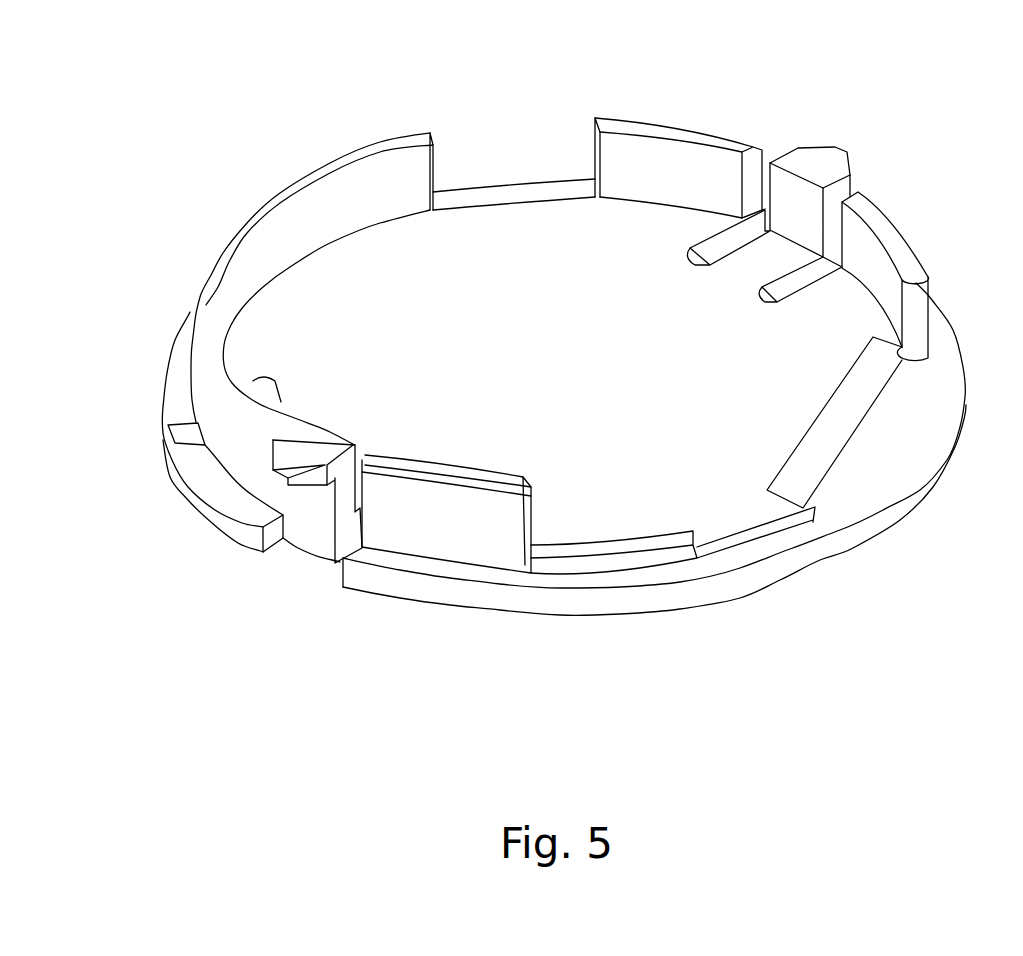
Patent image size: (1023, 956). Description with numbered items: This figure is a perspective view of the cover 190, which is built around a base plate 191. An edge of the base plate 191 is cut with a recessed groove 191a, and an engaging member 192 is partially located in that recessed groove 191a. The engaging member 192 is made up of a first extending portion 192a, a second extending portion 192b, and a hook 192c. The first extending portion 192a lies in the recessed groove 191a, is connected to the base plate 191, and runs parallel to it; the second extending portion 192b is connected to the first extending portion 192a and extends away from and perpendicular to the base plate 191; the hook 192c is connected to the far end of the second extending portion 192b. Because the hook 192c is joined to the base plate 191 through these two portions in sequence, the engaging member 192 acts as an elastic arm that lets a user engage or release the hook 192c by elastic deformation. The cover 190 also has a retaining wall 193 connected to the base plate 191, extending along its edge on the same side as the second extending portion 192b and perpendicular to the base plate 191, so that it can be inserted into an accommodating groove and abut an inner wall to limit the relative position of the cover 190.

The cover 190 is at (128, 101).
The base plate 191 is at (890, 512).
The recessed groove 191a is at (708, 249).
The engaging member 192 is at (892, 62).
The first extending portion 192a is at (768, 253).
The second extending portion 192b is at (792, 217).
The hook 192c is at (822, 158).
The retaining wall 193 is at (207, 269).